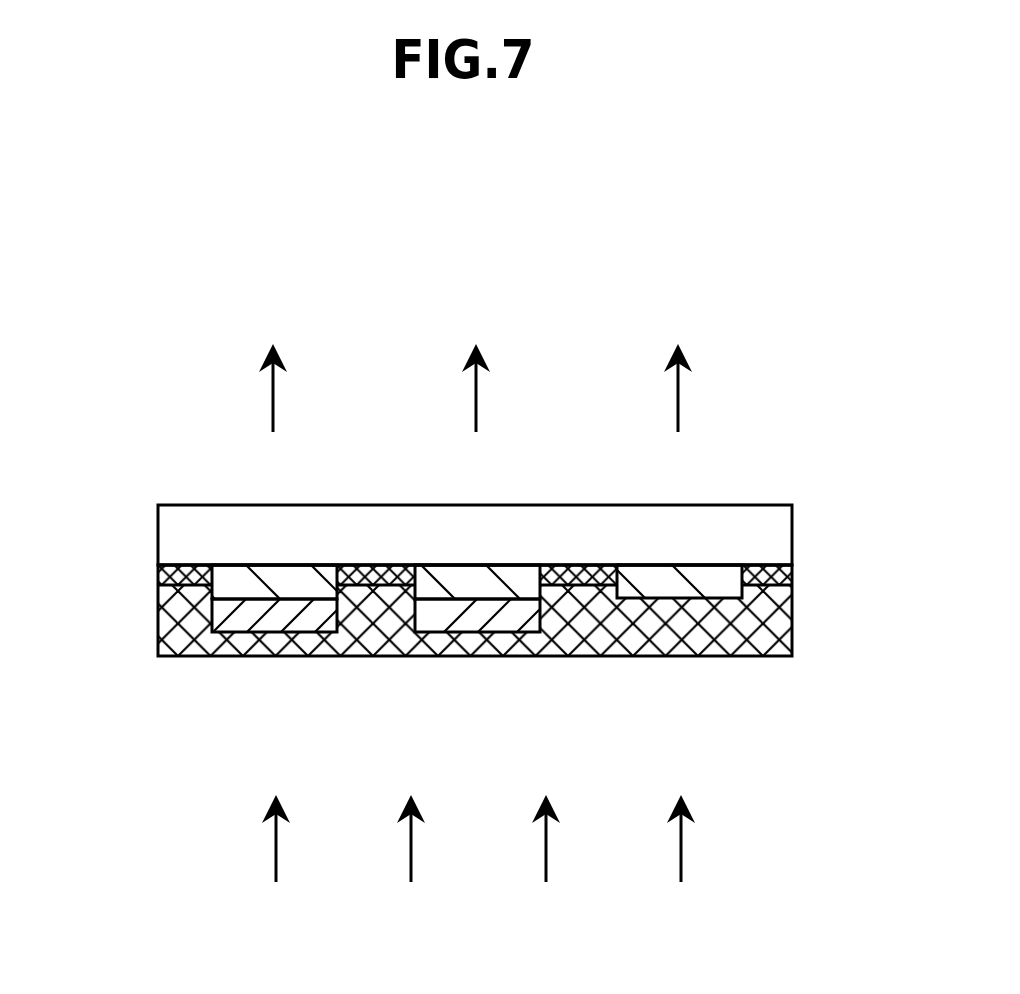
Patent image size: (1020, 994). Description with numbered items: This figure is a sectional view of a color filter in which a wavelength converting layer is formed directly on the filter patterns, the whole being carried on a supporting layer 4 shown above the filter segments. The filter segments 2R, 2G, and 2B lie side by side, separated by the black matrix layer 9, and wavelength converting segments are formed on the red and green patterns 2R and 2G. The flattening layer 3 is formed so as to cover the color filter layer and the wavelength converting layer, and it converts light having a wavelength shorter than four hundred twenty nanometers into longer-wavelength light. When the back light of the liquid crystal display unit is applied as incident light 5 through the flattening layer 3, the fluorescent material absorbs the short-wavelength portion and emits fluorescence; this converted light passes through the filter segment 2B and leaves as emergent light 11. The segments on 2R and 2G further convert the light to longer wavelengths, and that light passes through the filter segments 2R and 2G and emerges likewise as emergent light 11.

The emergent light 11 is at (475, 343).
The incident light 5 is at (478, 883).
The transparent substrate 4 is at (212, 552).
The black matrix layer 9 is at (777, 577).
The flattening layer 3 is at (765, 633).
The green filter segment 2G is at (268, 580).
The red filter segment 2R is at (462, 580).
The blue filter segment 2B is at (684, 577).